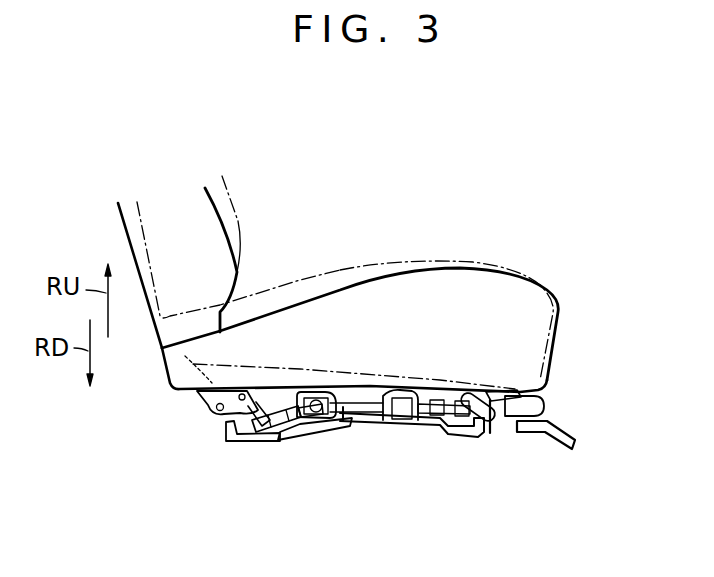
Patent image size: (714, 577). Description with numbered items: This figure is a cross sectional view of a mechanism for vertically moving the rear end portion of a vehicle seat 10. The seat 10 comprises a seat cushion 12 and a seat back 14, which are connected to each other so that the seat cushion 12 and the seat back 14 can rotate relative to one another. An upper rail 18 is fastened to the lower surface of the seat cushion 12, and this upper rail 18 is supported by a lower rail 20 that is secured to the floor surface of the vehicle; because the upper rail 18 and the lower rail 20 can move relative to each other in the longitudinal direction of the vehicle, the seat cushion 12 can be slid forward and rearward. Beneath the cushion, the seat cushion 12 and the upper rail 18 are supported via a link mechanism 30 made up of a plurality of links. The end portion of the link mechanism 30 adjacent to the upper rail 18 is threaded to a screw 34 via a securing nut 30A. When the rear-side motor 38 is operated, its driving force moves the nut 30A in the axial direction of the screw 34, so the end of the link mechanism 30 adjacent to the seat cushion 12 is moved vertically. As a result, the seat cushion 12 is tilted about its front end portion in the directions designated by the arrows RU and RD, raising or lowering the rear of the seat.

The seat 10 is at (487, 199).
The seat cushion 12 is at (403, 270).
The seat back 14 is at (234, 240).
The upper rail 18 is at (508, 418).
The lower rail 20 is at (540, 410).
The link mechanism 30 is at (226, 414).
The securing nut 30A is at (256, 440).
The screw 34 is at (273, 438).
The rear-side motor 38 is at (318, 432).